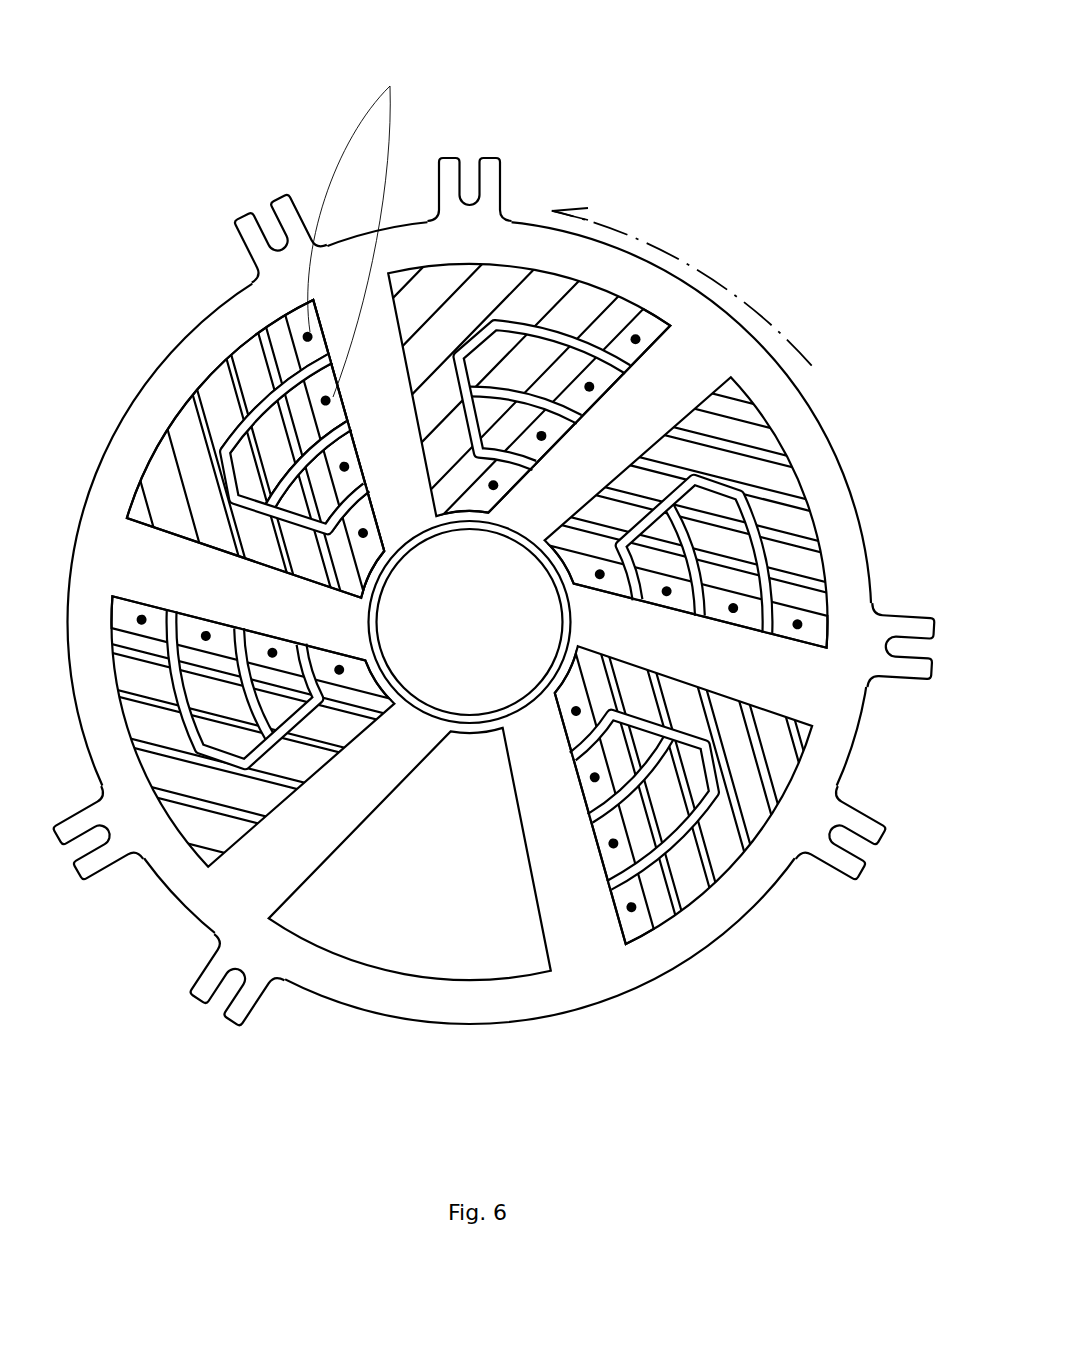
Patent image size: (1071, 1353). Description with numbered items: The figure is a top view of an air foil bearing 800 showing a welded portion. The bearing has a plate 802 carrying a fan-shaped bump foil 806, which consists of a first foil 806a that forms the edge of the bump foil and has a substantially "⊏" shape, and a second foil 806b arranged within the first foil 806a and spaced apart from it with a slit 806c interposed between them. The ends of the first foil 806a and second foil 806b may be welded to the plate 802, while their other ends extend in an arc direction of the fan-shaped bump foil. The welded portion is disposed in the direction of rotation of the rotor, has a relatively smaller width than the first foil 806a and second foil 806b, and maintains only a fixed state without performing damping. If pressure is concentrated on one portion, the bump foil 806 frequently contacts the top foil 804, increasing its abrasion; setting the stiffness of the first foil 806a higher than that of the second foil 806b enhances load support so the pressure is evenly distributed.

The rotor 800 is at (549, 42).
The plate 802 is at (88, 552).
The top foil 804 is at (445, 935).
The bump foil 806 is at (80, 240).
The first foil 806a is at (188, 440).
The second foil 806b is at (318, 483).
The slit 806c is at (278, 443).